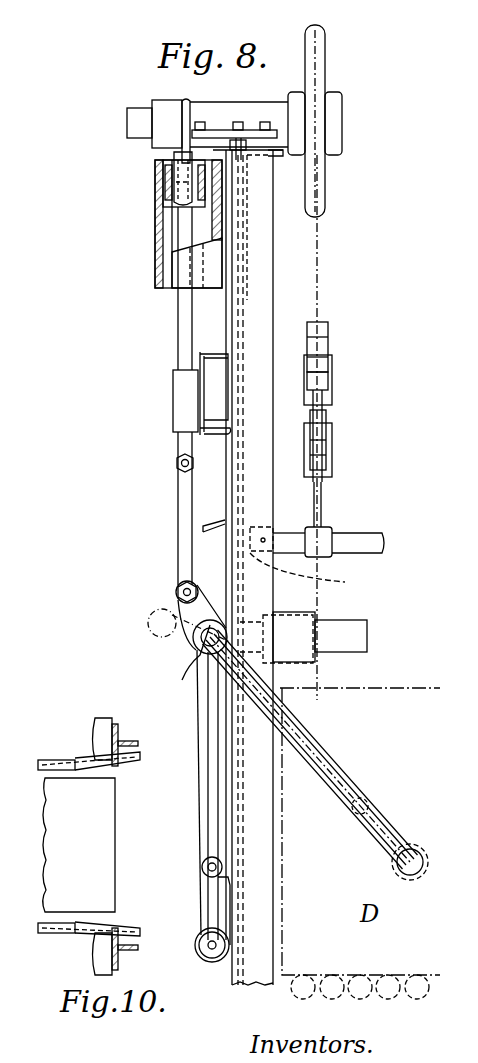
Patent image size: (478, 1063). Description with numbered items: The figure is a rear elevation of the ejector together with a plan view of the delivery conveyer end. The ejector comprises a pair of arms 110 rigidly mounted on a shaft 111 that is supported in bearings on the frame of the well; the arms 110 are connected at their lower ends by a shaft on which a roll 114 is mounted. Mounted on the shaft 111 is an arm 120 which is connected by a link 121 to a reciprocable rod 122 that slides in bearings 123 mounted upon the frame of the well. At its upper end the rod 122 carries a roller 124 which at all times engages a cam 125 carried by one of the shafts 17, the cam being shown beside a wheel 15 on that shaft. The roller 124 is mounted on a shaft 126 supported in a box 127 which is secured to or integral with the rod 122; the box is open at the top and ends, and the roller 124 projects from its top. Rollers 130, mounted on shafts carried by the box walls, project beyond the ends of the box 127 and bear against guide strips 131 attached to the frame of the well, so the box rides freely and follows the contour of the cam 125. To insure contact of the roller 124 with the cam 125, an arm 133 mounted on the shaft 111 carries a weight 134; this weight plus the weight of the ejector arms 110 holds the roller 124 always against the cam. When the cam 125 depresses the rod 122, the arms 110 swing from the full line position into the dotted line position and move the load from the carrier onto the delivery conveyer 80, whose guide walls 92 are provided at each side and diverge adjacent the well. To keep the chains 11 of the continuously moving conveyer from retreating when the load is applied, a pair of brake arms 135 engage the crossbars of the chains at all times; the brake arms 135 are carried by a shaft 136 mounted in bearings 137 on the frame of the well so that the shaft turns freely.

In FIG. 8, the wheel 15 is at (320, 64).
In FIG. 8, the cam 125 is at (175, 97).
In FIG. 8, the shaft 17 is at (133, 130).
In FIG. 8, the guide strips 131 is at (158, 278).
In FIG. 8, the shaft 126 is at (160, 200).
In FIG. 8, the rollers 130 is at (165, 172).
In FIG. 8, the roller 124 is at (168, 157).
In FIG. 8, the box 127 is at (172, 206).
In FIG. 8, the reciprocable rod 122 is at (185, 322).
In FIG. 8, the bearings 123 is at (182, 398).
In FIG. 8, the link 121 is at (185, 526).
In FIG. 8, the arm 120 is at (198, 640).
In FIG. 8, the shaft 111 is at (176, 661).
In FIG. 8, the ejector arms 110 is at (205, 775).
In FIG. 8, the chains 11 is at (330, 334).
In FIG. 8, the brake arms 135 is at (323, 498).
In FIG. 8, the shaft 136 is at (355, 540).
In FIG. 8, the bearings 137 is at (313, 573).
In FIG. 8, the arm 133 is at (357, 650).
In FIG. 8, the weight 134 is at (305, 662).
In FIG. 10, the conveyer 80 is at (79, 845).
In FIG. 10, the guide walls 92 is at (58, 763).
In FIG. 10, the roll 114 is at (128, 756).